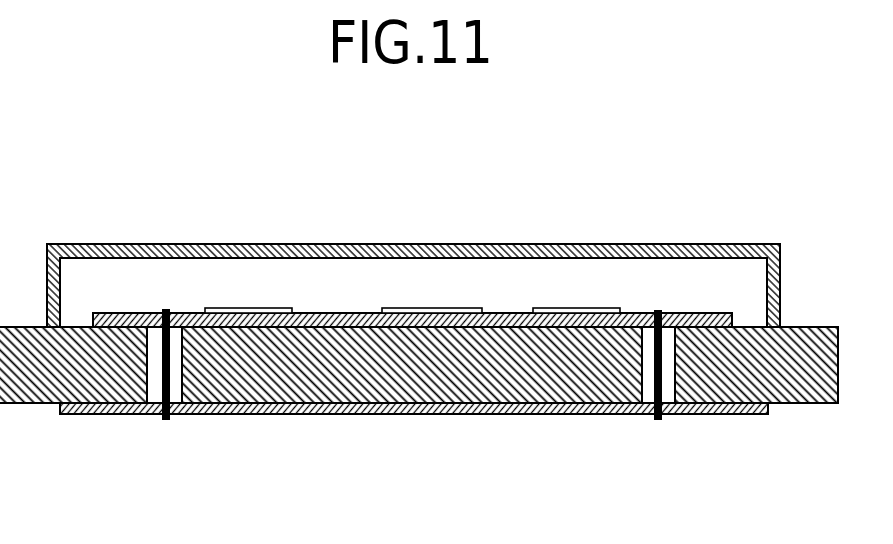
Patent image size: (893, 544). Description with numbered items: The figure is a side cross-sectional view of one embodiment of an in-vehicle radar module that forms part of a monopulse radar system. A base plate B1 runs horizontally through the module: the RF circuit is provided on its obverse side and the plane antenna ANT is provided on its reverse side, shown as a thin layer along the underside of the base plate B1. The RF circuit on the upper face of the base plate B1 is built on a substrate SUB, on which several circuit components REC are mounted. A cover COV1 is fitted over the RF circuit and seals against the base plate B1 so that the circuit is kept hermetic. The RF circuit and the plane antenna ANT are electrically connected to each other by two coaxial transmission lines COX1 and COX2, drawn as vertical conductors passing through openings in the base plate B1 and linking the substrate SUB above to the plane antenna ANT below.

The cover COV1 is at (100, 243).
The receiving circuit elements REC is at (352, 312).
The substrate SUB is at (707, 313).
The coaxial transmission line COX1 is at (157, 393).
The plane antenna ANT is at (328, 415).
The base plate B1 is at (507, 385).
The coaxial transmission line COX2 is at (668, 393).